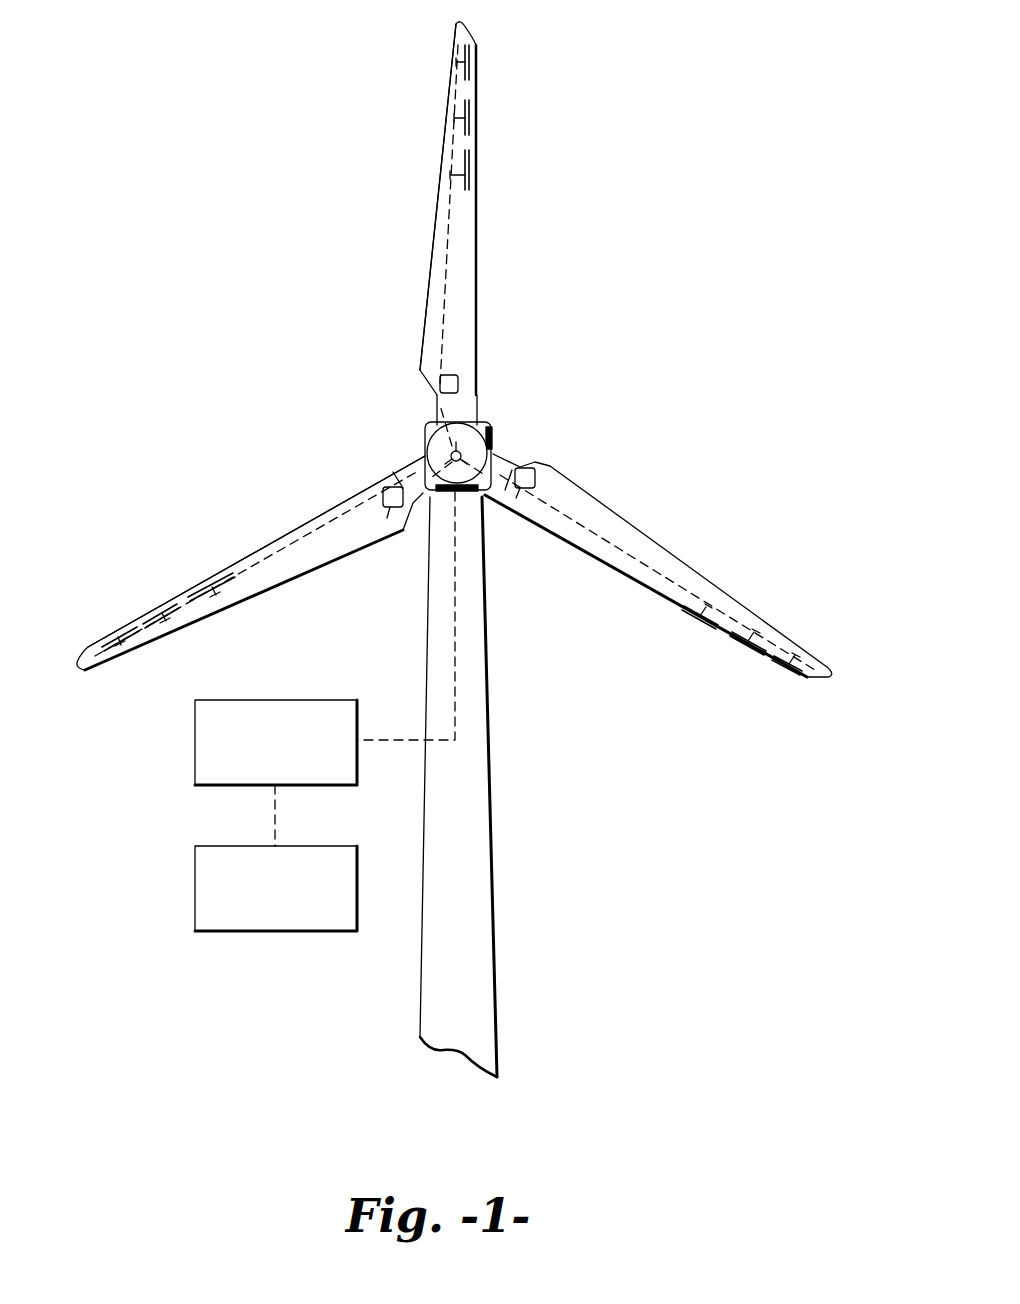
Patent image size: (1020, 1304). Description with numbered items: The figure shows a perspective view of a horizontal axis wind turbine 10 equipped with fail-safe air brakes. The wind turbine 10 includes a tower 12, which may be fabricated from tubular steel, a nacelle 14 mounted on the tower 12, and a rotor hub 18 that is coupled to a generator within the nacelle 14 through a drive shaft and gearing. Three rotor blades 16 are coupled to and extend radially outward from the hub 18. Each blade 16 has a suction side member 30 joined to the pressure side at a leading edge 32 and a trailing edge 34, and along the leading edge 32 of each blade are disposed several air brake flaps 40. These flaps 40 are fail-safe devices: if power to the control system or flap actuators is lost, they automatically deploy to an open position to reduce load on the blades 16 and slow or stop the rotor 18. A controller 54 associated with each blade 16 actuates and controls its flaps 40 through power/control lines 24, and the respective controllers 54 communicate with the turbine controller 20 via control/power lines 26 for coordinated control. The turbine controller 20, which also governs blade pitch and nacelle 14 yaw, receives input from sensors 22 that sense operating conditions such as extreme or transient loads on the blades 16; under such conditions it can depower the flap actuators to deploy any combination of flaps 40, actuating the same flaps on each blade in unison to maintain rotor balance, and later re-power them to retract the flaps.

The wind turbine 10 is at (597, 152).
The tower 12 is at (477, 940).
The nacelle 14 is at (427, 432).
The rotor blades 16 is at (459, 349).
The rotor hub 18 is at (463, 428).
The turbine controller 20 is at (205, 745).
The sensors 22 is at (205, 891).
The power/control lines 24 is at (608, 527).
The control/power lines 26 is at (457, 705).
The suction side member 30 is at (474, 242).
The leading edge 32 is at (477, 280).
The trailing edge 34 is at (432, 297).
The air brake flaps 40 is at (473, 175).
The controller 54 is at (365, 483).